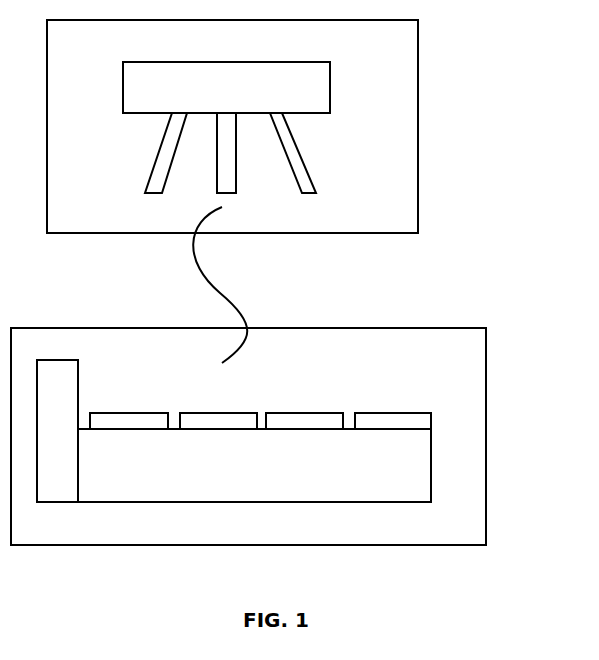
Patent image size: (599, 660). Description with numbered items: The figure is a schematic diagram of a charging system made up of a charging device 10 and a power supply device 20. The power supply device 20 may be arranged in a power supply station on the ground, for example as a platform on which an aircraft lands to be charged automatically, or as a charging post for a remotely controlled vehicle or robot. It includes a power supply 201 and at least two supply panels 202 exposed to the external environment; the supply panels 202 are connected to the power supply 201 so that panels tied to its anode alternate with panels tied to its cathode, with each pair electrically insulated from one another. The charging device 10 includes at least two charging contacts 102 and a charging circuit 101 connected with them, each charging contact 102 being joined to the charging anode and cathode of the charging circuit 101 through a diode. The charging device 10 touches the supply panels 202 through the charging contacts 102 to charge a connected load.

The charging device 10 is at (418, 128).
The charging circuit 101 is at (185, 62).
The charging contacts 102 is at (163, 142).
The power supply device 20 is at (412, 328).
The power supply 201 is at (78, 378).
The supply panels 202 is at (128, 413).